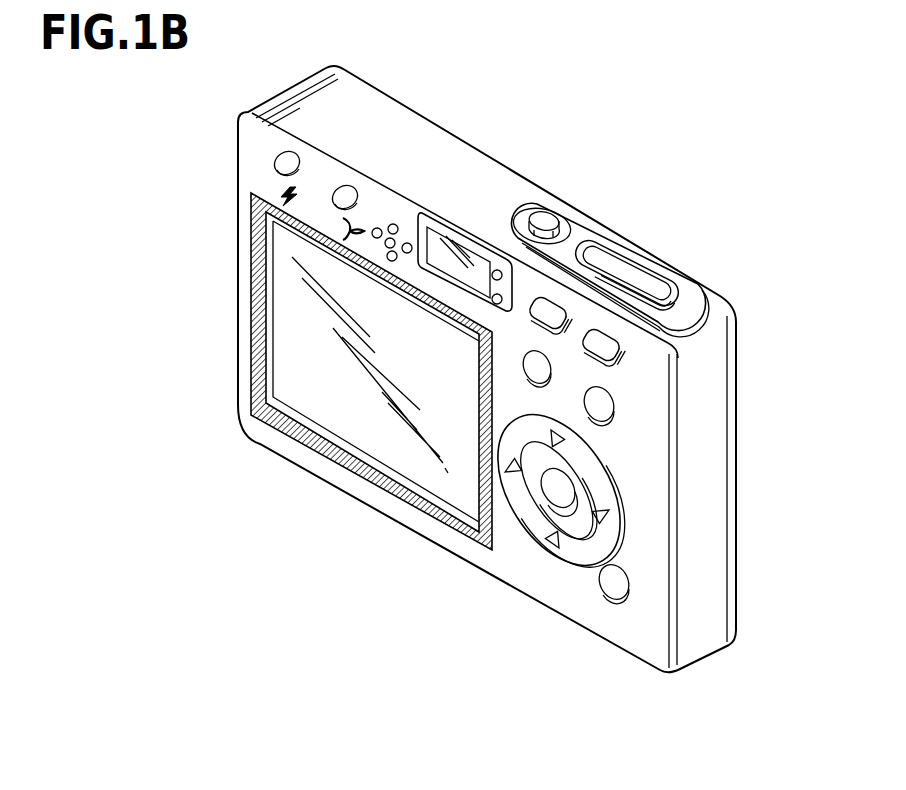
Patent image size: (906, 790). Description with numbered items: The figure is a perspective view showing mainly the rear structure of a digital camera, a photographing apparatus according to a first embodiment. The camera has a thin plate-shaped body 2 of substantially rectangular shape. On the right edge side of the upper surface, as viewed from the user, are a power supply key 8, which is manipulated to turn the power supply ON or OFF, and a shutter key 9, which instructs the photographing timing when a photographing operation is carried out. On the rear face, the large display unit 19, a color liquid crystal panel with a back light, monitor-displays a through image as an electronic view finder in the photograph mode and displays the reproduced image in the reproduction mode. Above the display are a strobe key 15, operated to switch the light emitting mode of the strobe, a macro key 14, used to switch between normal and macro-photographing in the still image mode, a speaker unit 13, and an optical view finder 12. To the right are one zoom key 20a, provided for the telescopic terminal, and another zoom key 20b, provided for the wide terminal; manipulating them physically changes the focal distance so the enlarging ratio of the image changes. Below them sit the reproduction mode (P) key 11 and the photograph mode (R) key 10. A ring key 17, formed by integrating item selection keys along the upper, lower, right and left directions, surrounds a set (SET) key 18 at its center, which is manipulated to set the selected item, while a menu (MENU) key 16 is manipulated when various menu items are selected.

The body 2 is at (738, 372).
The power supply key 8 is at (546, 220).
The shutter key 9 is at (628, 270).
The photograph mode (R) key 10 is at (600, 427).
The reproduction mode (P) key 11 is at (528, 380).
The optical view finder 12 is at (470, 263).
The speaker unit 13 is at (398, 235).
The macro key 14 is at (348, 187).
The strobe key 15 is at (292, 157).
The menu (MENU) key 16 is at (603, 585).
The ring key 17 is at (532, 517).
The set (SET) key 18 is at (557, 507).
The display unit 19 is at (345, 402).
The zoom key 20a is at (536, 297).
The zoom key 20b is at (613, 358).